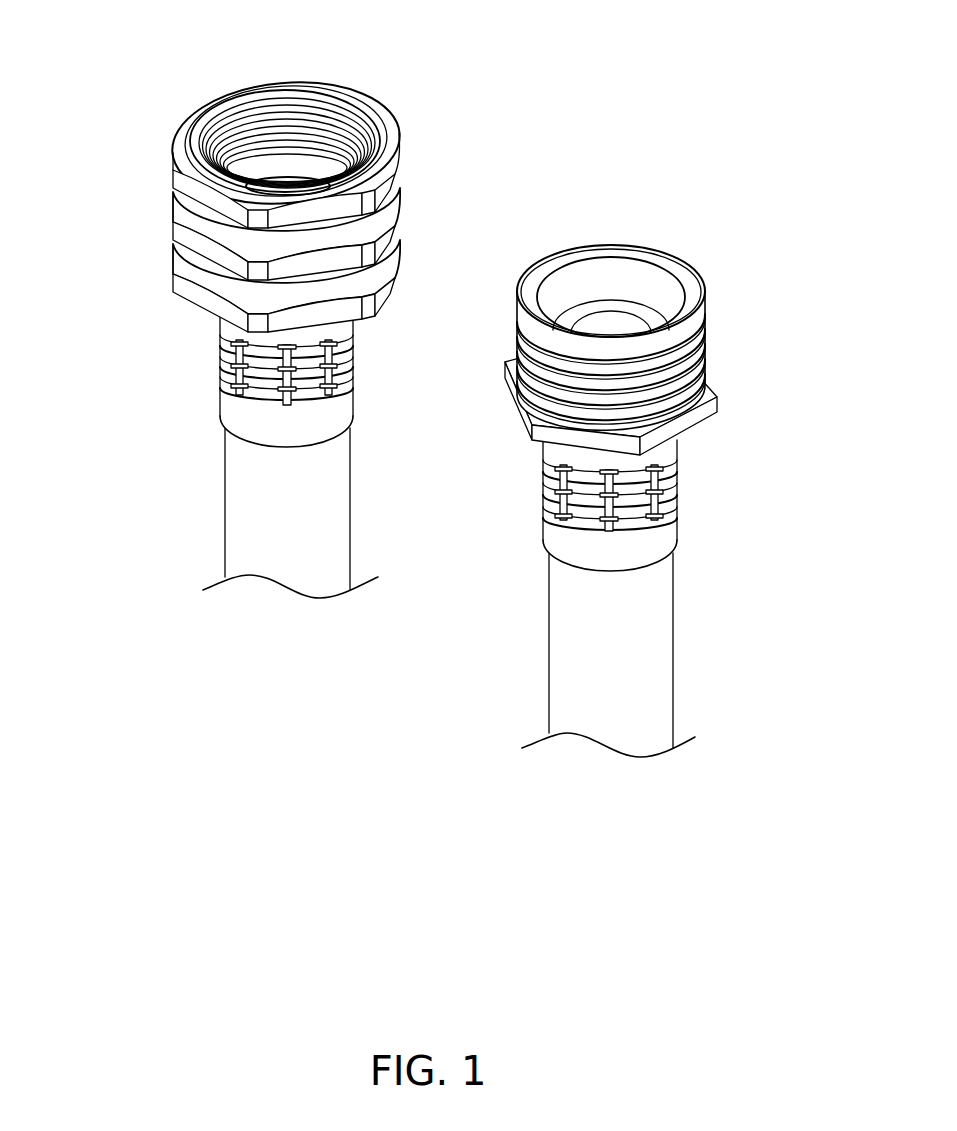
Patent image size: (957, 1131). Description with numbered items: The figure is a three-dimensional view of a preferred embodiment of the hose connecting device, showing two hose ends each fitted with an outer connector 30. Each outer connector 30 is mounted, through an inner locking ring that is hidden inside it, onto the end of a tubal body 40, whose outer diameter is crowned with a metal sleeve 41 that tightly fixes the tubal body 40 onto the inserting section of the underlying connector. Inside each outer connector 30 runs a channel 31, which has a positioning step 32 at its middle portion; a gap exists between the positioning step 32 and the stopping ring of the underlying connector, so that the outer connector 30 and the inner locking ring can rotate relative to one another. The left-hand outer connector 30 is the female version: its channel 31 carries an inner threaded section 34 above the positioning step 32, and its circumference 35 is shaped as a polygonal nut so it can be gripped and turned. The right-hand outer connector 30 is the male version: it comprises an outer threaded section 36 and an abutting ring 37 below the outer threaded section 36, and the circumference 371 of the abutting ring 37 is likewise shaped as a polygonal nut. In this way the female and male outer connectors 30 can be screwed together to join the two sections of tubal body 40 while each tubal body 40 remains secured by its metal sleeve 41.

The outer connector 30 is at (522, 232).
The channel 31 is at (242, 152).
The positioning step 32 is at (288, 168).
The inner threaded section 34 is at (337, 138).
The circumference 35 is at (398, 212).
The outer threaded section 36 is at (706, 320).
The abutting ring 37 is at (670, 403).
The circumference 371 is at (713, 413).
The tubal body 40 is at (192, 475).
The metal sleeve 41 is at (224, 362).